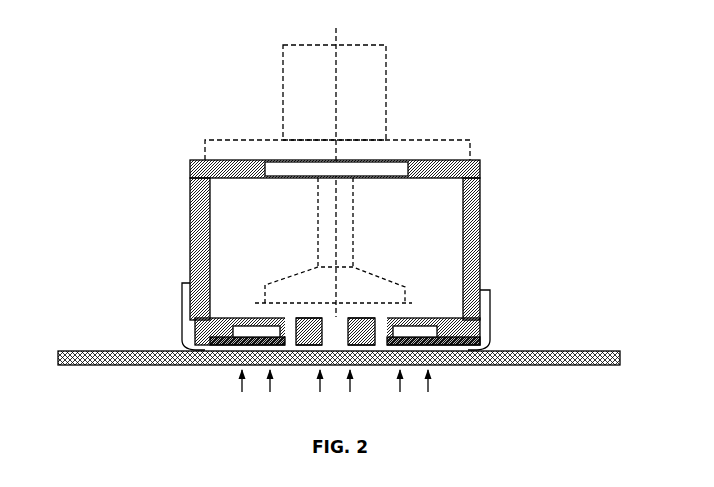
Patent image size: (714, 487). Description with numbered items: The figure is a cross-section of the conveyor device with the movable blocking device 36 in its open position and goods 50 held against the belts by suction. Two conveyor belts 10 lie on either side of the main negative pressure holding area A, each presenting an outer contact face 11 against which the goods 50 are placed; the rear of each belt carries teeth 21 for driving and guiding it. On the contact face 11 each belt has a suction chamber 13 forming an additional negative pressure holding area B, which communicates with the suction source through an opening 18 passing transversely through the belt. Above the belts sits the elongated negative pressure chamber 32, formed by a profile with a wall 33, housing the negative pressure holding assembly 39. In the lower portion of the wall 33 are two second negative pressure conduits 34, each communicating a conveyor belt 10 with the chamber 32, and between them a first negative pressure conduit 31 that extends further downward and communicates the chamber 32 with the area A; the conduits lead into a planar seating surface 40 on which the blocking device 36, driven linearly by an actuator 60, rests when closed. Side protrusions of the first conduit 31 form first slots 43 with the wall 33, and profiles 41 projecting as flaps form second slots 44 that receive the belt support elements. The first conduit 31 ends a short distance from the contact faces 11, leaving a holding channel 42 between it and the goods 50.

The conveyor belt 10 is at (135, 80).
The actuator 60 is at (355, 100).
The negative pressure holding assembly 39 is at (285, 197).
The negative pressure chamber 32 is at (437, 190).
The planar seating surface 40 is at (360, 312).
The first slot 43 is at (375, 330).
The movable blocking device 36 is at (400, 297).
The second negative pressure conduit 34 is at (288, 320).
The wall 33 is at (293, 318).
The opening 18 is at (270, 320).
The profile 41 is at (183, 297).
The second slot 44 is at (200, 346).
The goods 50 is at (576, 352).
The outer contact face 11 is at (208, 357).
The teeth 21 is at (242, 357).
The suction chamber 13 is at (264, 366).
The holding channel 42 is at (356, 358).
The first negative pressure conduit 31 is at (380, 360).
The main negative pressure holding area A is at (309, 358).
The additional negative pressure holding area B is at (459, 384).